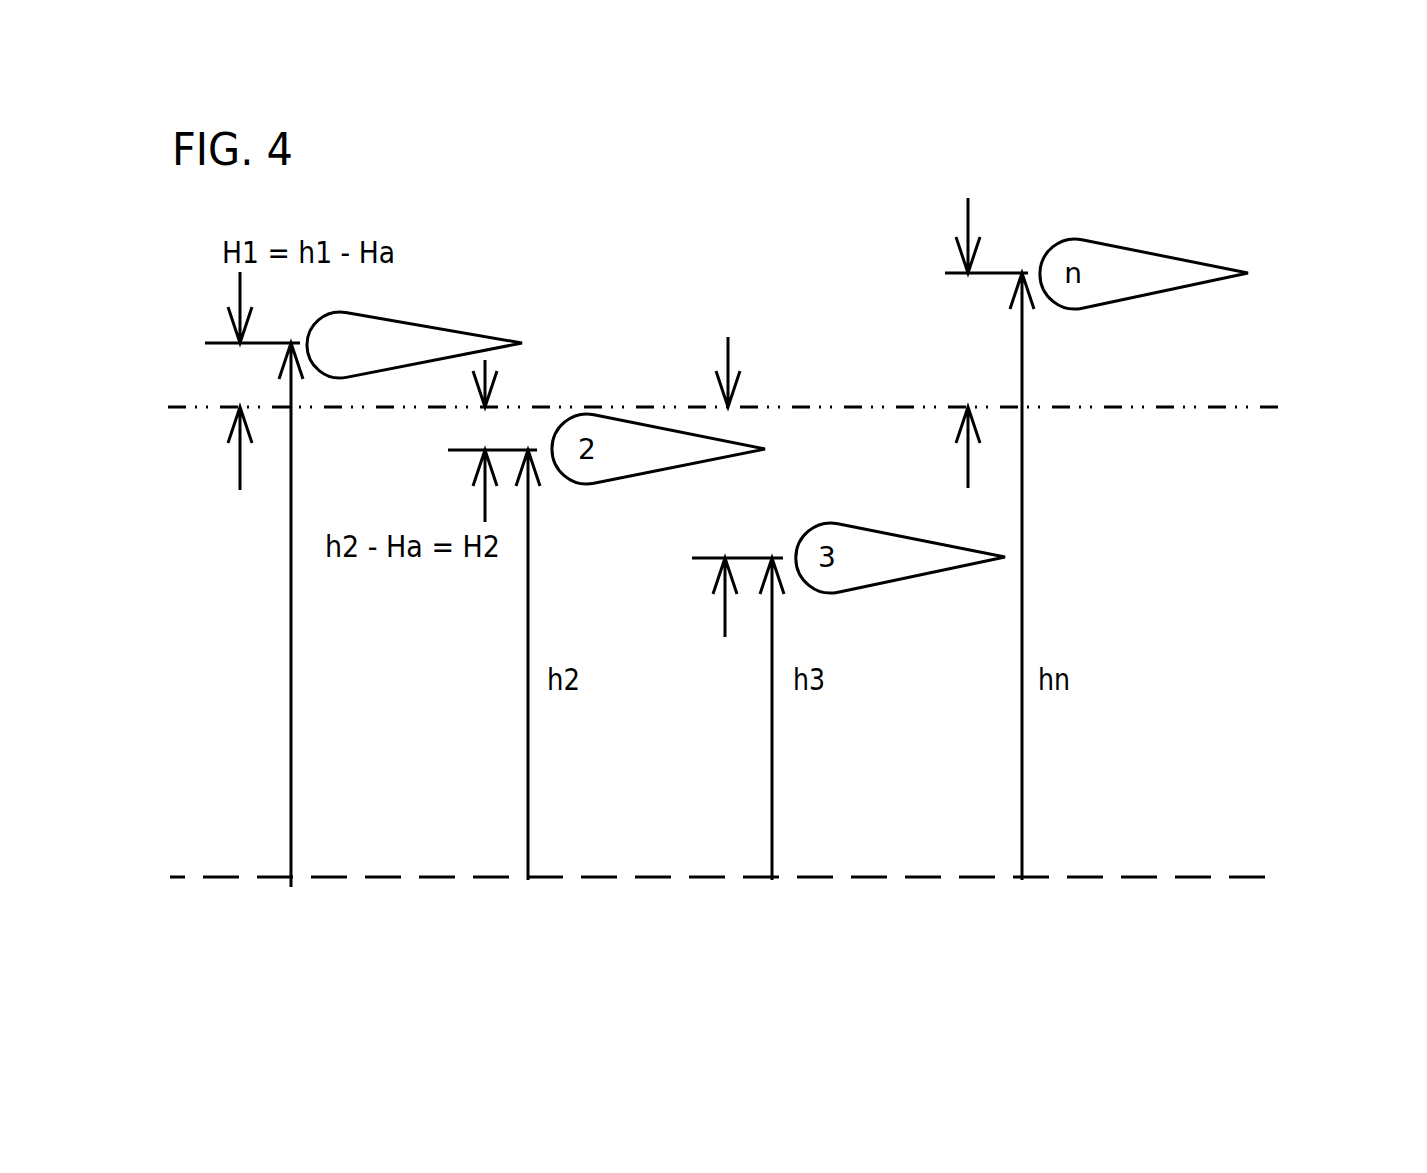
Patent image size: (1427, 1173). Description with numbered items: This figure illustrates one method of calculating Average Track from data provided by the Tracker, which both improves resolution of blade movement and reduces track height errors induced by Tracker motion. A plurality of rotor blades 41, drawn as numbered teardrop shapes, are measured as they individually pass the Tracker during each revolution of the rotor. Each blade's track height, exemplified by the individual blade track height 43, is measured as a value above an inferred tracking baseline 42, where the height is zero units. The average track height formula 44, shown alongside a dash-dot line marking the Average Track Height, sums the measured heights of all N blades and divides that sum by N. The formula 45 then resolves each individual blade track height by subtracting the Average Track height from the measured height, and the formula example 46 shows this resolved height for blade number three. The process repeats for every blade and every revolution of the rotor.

The rotor blades 41 is at (422, 324).
The tracking baseline 42 is at (213, 875).
The individual blade track height 43 is at (290, 583).
The average track height formula 44 is at (1300, 362).
The blade height formula referenced to average track height 45 is at (1120, 192).
The formula example, height of blade number three 46 is at (730, 292).